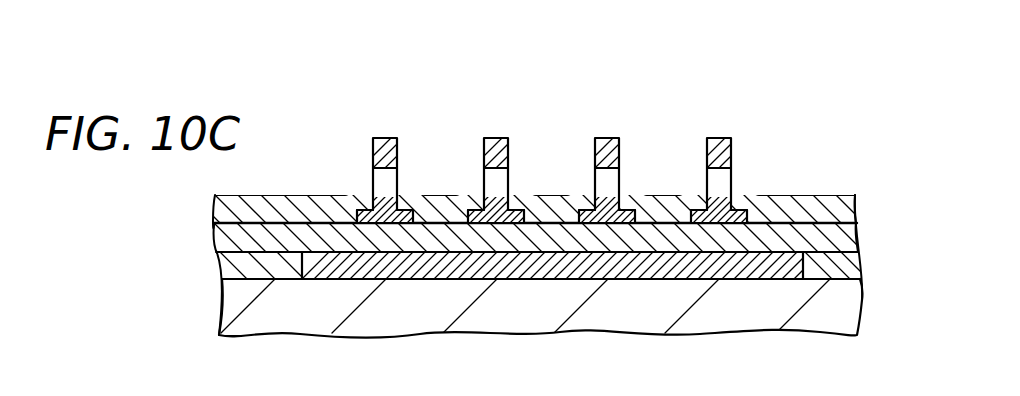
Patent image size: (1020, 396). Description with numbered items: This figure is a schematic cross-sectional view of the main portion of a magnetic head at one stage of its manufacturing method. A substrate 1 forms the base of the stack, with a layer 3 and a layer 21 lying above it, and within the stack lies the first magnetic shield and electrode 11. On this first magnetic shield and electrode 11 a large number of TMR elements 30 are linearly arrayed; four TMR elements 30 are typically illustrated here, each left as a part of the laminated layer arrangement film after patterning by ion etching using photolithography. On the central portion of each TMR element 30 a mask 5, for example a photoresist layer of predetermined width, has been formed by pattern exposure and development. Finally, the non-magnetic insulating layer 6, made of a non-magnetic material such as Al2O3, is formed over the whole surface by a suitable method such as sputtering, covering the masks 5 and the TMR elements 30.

The substrate 1 is at (777, 307).
The insulating layer 3 is at (828, 262).
The first magnetic shield and electrode 11 is at (657, 257).
The interlayer 21 is at (670, 240).
The non-magnetic insulating layer 6 is at (397, 140).
The mask 5 is at (387, 180).
The TMR element 30 is at (367, 183).